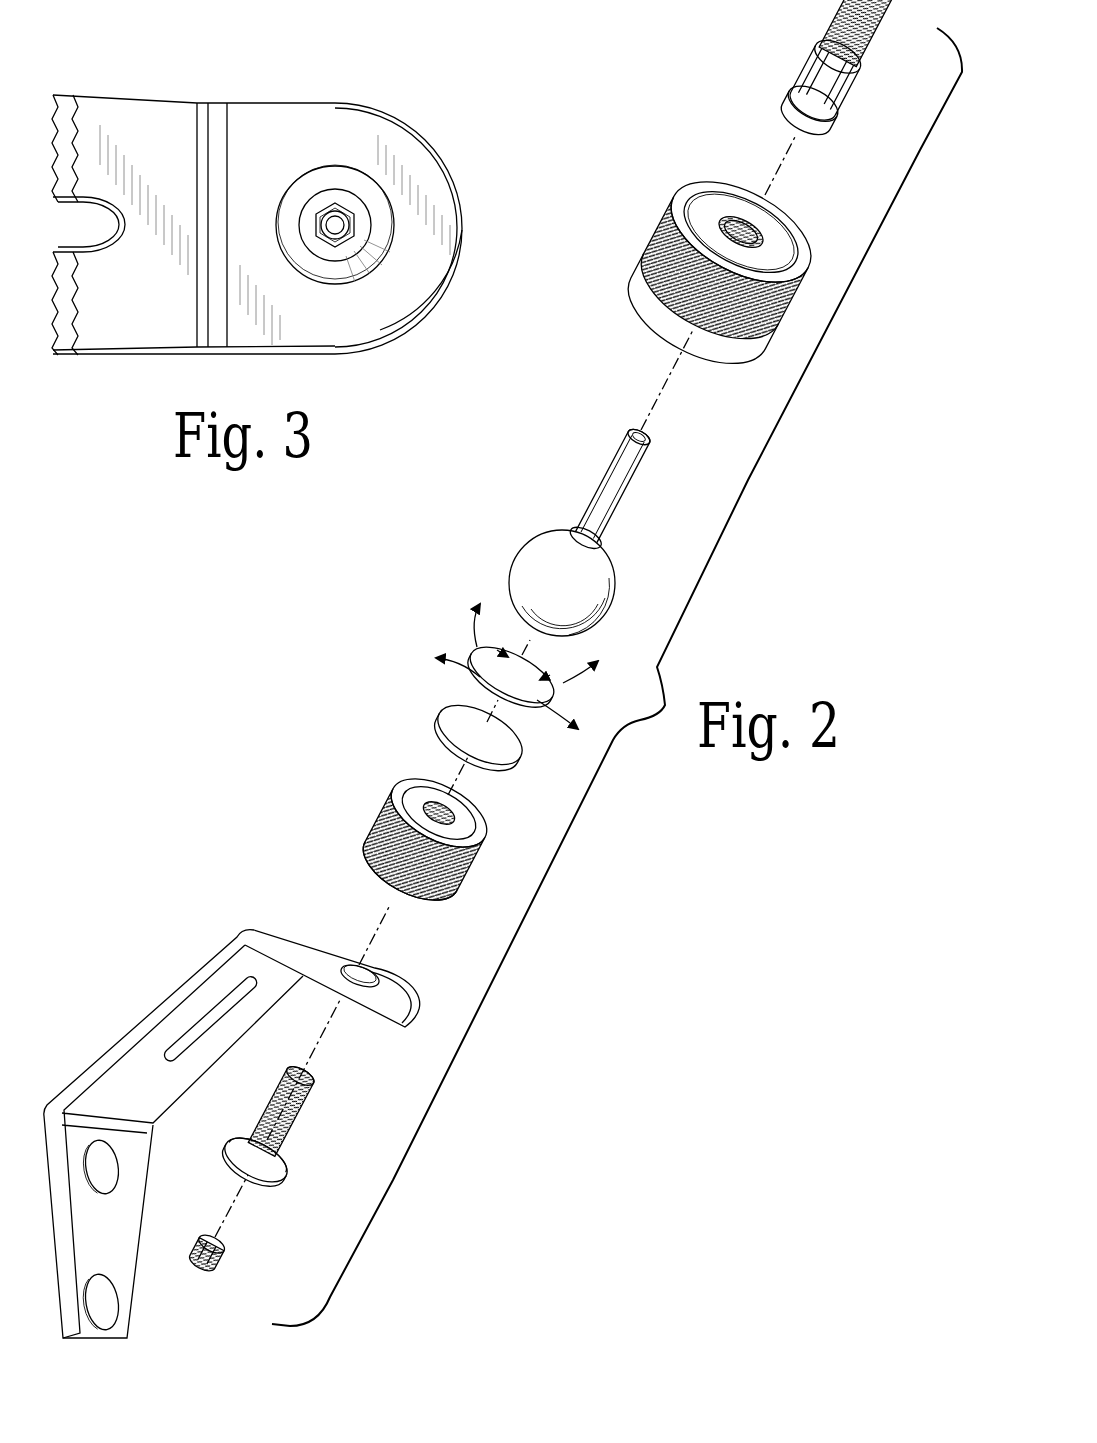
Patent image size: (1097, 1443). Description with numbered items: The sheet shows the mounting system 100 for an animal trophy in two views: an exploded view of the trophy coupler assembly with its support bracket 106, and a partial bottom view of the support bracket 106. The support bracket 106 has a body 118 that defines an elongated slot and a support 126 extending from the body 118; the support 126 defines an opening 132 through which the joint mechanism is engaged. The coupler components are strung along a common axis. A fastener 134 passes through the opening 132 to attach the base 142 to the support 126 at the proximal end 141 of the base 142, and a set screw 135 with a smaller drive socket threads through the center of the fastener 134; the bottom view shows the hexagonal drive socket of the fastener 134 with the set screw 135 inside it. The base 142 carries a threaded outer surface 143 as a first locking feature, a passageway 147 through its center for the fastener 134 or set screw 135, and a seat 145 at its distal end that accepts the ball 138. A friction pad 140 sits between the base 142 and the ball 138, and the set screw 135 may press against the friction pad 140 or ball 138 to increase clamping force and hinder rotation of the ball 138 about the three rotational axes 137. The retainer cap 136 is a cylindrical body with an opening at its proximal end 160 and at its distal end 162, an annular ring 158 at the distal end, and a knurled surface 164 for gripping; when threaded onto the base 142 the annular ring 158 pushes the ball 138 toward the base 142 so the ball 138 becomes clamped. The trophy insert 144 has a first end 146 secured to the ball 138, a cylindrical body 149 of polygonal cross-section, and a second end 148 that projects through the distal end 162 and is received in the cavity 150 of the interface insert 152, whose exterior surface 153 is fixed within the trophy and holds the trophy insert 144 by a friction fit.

In FIG. 2, the mounting system 100 is at (176, 775).
In FIG. 3, the support bracket 106 is at (93, 348).
In FIG. 3, the body 118 is at (147, 337).
In FIG. 3, the support 126 is at (402, 346).
In FIG. 2, the opening 132 is at (372, 975).
In FIG. 3, the fastener 134 is at (385, 213).
In FIG. 2, the fastener 134 is at (260, 1183).
In FIG. 3, the set screw 135 is at (337, 222).
In FIG. 2, the set screw 135 is at (212, 1262).
In FIG. 2, the retainer cap 136 is at (697, 268).
In FIG. 2, the three possible rotational axes x, y, and z 137 is at (467, 580).
In FIG. 2, the ball 138 is at (623, 495).
In FIG. 2, the friction pad 140 is at (455, 712).
In FIG. 2, the proximal end 141 is at (426, 899).
In FIG. 2, the base 142 is at (421, 830).
In FIG. 2, the threaded outer surface 143 is at (384, 838).
In FIG. 2, the trophy insert 144 is at (626, 456).
In FIG. 2, the seat 145 is at (466, 799).
In FIG. 2, the first end 146 is at (618, 555).
In FIG. 2, the passageway 147 is at (426, 782).
In FIG. 2, the second end 148 is at (671, 419).
In FIG. 2, the cylindrical body 149 is at (580, 466).
In FIG. 2, the cavity 150 is at (810, 148).
In FIG. 2, the interface insert 152 is at (823, 44).
In FIG. 2, the exterior surface 153 is at (853, 104).
In FIG. 2, the annular ring 158 is at (766, 226).
In FIG. 2, the proximal end 160 is at (694, 344).
In FIG. 2, the distal end 162 is at (734, 194).
In FIG. 2, the knurled surface 164 is at (686, 261).